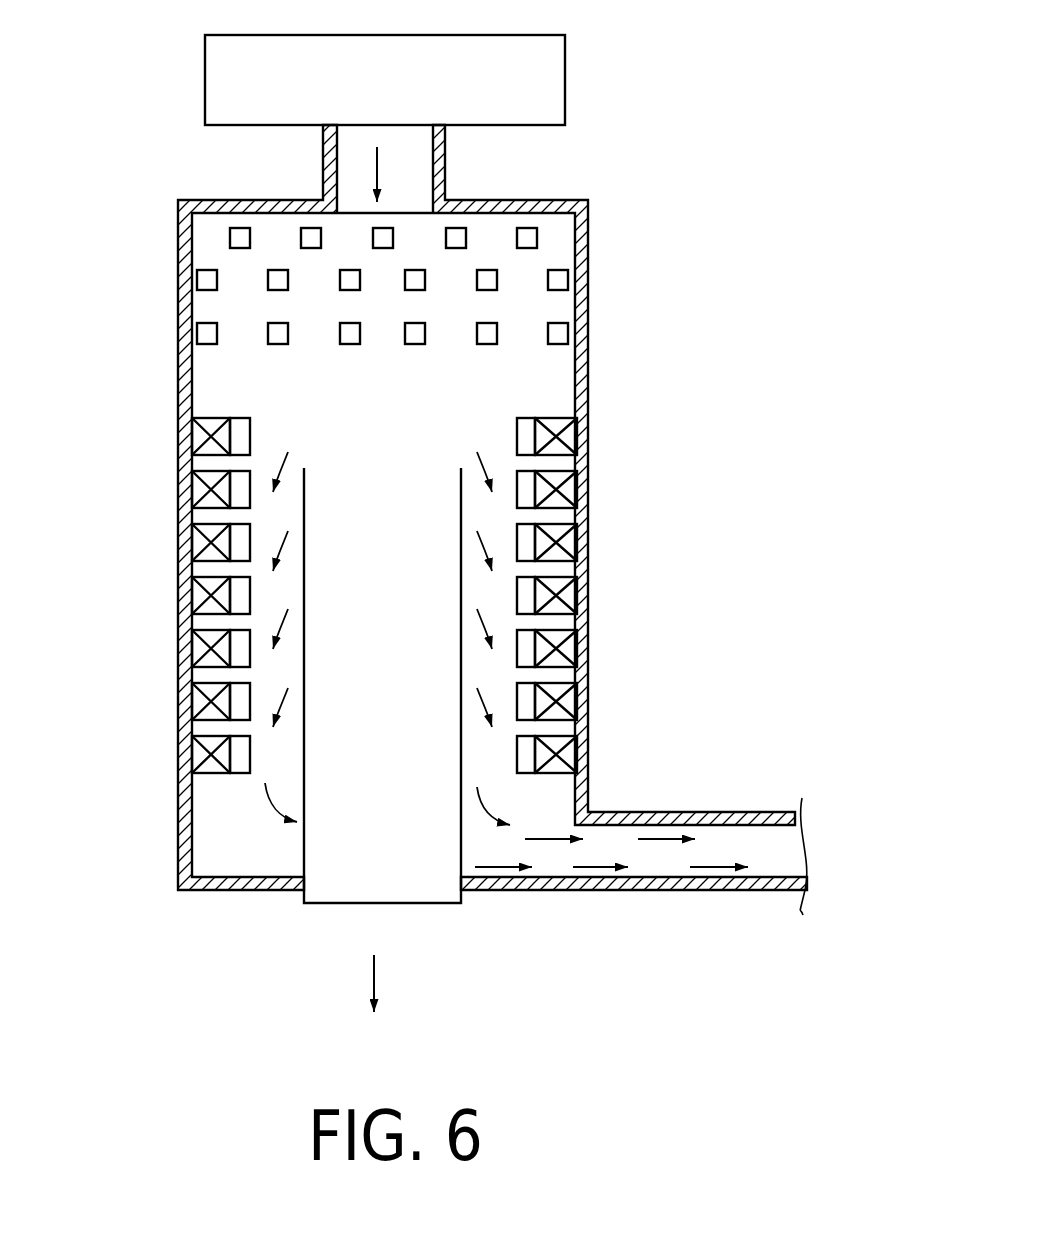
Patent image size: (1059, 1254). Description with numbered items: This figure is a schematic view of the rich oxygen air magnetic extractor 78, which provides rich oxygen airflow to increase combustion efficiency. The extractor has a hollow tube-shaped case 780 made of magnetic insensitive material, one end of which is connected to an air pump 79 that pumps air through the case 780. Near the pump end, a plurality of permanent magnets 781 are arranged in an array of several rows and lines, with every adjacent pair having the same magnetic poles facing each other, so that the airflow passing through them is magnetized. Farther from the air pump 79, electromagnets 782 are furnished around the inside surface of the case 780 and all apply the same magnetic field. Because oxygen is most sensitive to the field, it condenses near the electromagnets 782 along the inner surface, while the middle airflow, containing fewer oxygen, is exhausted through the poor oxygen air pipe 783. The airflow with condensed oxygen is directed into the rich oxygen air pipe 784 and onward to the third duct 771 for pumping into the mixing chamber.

The rich oxygen air magnetic extractor 78 is at (672, 537).
The air pump 79 is at (557, 78).
The third duct 771 is at (760, 815).
The case 780 is at (588, 383).
The permanent magnets 781 is at (490, 277).
The electromagnets 782 is at (200, 485).
The poor oxygen air pipe 783 is at (325, 903).
The rich oxygen air pipe 784 is at (498, 850).